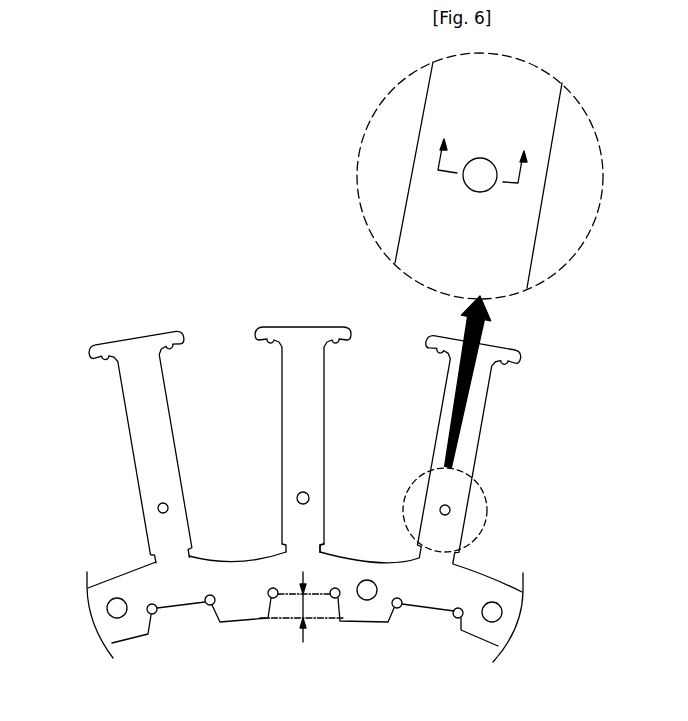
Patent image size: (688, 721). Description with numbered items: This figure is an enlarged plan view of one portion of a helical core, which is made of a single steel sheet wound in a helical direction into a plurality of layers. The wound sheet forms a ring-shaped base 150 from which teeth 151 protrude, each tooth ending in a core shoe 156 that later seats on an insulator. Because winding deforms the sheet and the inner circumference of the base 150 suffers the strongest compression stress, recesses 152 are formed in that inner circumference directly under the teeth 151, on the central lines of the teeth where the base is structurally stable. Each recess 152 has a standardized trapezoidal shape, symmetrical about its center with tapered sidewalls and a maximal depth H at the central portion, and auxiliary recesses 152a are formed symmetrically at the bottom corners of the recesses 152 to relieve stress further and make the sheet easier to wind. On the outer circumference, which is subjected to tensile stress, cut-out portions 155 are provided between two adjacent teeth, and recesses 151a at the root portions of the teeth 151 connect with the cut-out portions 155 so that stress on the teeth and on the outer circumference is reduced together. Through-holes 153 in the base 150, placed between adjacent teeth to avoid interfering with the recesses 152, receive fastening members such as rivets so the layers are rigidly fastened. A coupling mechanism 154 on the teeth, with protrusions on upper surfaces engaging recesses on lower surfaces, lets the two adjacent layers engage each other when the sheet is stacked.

The base 150 is at (363, 610).
The teeth 151 is at (143, 436).
The recesses 151a is at (327, 548).
The recesses 152 is at (427, 630).
The auxiliary recesses 152a is at (207, 609).
The through-holes 153 is at (118, 615).
The coupling mechanism 154 is at (158, 510).
The cut-out portions 155 is at (235, 558).
The core shoes 156 is at (275, 330).